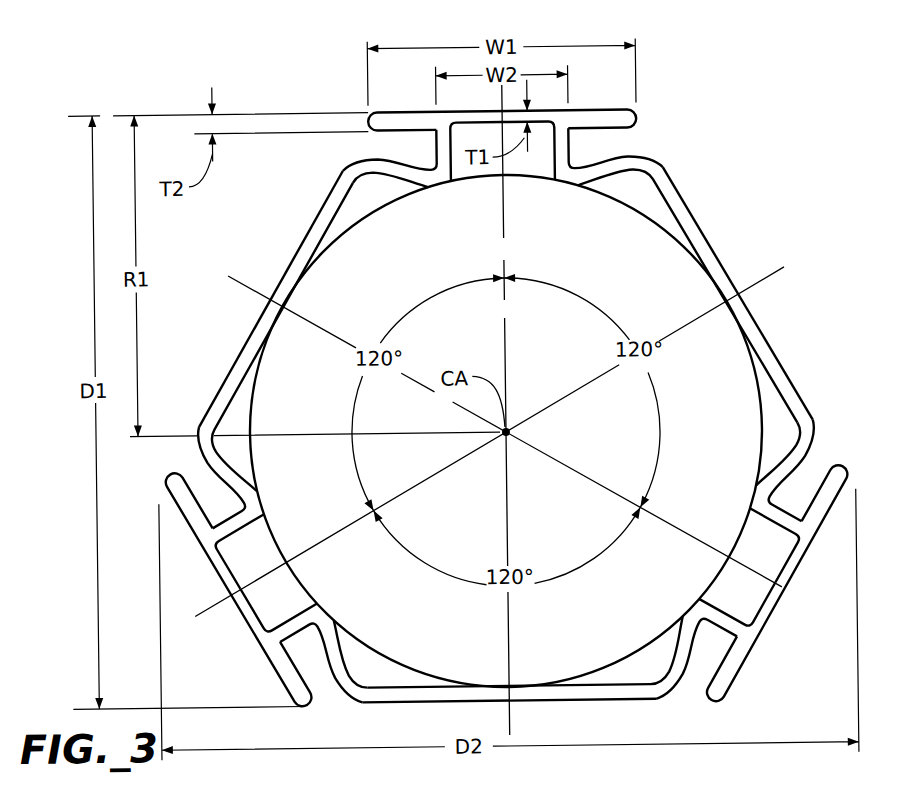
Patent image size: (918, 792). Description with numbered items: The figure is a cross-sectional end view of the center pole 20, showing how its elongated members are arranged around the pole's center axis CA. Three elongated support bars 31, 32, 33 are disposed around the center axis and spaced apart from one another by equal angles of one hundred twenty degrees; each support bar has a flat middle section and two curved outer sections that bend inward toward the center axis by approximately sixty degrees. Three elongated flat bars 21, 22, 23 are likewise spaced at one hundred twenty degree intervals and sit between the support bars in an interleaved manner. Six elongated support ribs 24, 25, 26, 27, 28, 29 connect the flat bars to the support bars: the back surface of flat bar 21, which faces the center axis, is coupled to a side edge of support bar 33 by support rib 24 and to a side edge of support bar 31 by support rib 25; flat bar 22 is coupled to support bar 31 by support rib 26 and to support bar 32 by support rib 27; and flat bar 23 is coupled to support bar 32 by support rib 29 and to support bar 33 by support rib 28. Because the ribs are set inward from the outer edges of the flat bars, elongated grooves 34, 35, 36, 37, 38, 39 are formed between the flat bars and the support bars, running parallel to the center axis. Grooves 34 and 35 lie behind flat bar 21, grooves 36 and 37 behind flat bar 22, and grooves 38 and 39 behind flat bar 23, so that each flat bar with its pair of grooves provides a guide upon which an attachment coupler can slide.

The center pole 20 is at (731, 146).
The flat bar 21 is at (256, 643).
The flat bar 22 is at (754, 656).
The flat bar 23 is at (373, 116).
The support rib 24 is at (227, 539).
The support rib 25 is at (313, 603).
The support rib 26 is at (729, 611).
The support rib 27 is at (780, 528).
The support rib 28 is at (451, 148).
The support rib 29 is at (559, 148).
The support bar 31 is at (590, 704).
The support bar 32 is at (706, 216).
The support bar 33 is at (293, 263).
The groove 34 is at (203, 483).
The groove 35 is at (314, 663).
The groove 36 is at (711, 660).
The groove 37 is at (818, 477).
The groove 38 is at (403, 152).
The groove 39 is at (597, 163).